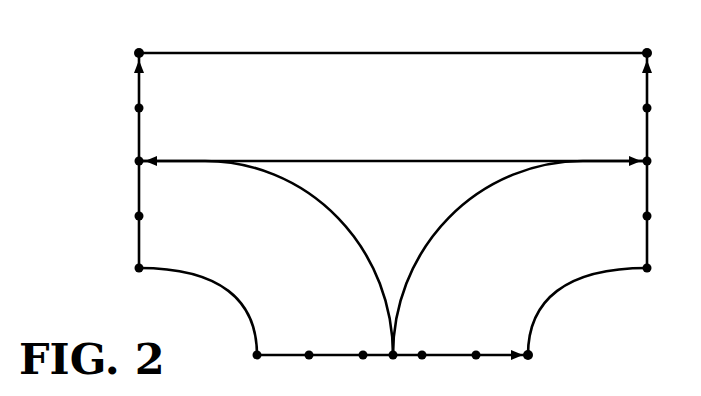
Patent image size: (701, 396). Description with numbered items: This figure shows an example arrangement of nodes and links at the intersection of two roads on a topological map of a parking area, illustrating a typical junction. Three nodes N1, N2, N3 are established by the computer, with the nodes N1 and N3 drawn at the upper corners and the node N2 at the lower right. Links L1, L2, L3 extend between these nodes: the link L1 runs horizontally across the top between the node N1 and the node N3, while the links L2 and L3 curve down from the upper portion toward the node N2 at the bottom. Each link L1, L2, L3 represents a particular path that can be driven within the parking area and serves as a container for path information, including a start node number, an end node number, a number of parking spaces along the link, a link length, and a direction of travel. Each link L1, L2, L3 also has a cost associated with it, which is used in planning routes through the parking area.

The node N1 is at (142, 39).
The node N2 is at (547, 362).
The node N3 is at (651, 39).
The link L1 is at (393, 141).
The link L2 is at (520, 258).
The link L3 is at (266, 258).